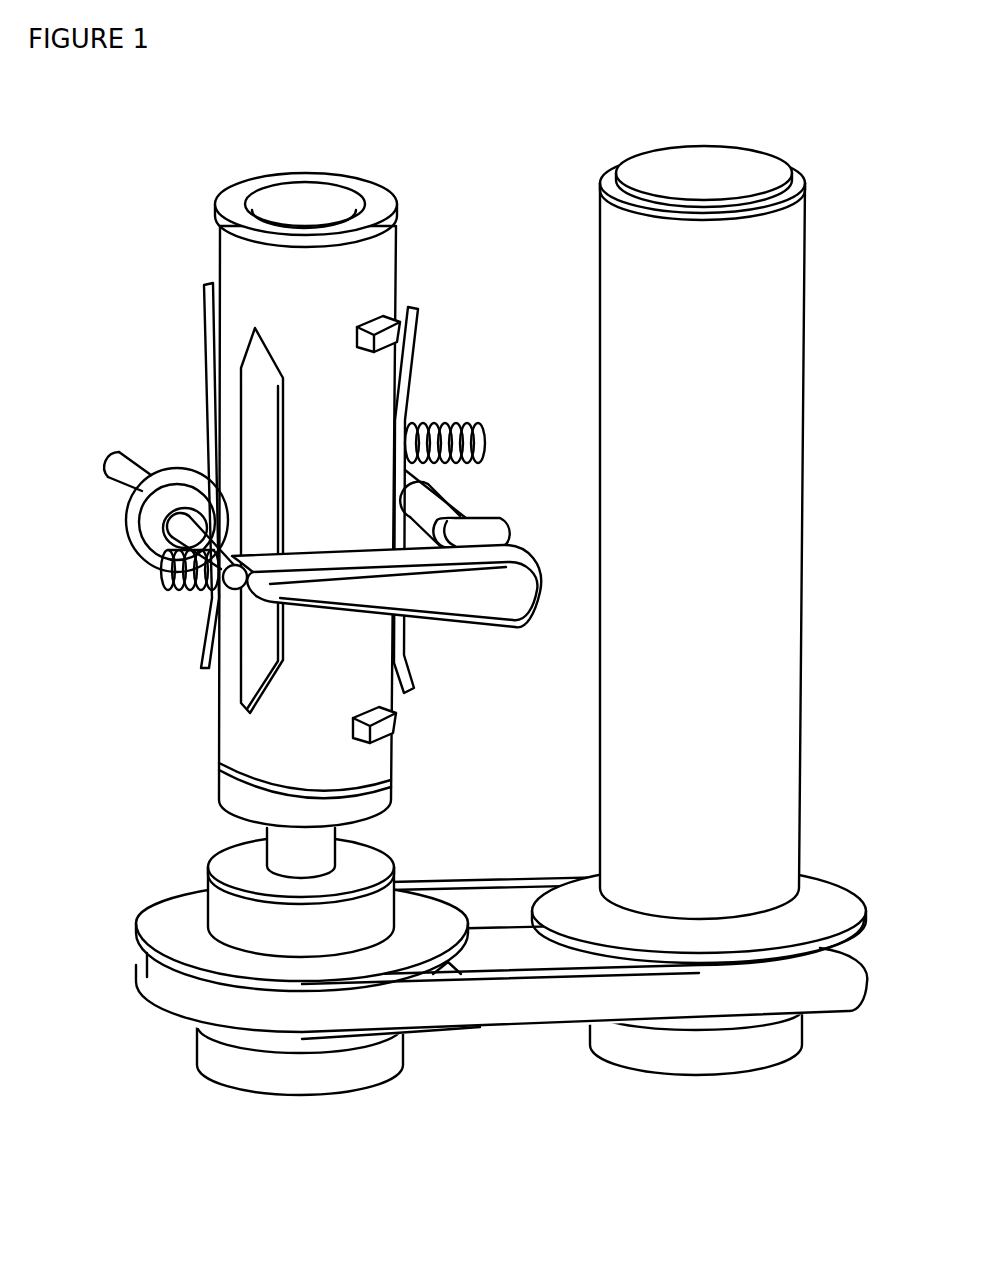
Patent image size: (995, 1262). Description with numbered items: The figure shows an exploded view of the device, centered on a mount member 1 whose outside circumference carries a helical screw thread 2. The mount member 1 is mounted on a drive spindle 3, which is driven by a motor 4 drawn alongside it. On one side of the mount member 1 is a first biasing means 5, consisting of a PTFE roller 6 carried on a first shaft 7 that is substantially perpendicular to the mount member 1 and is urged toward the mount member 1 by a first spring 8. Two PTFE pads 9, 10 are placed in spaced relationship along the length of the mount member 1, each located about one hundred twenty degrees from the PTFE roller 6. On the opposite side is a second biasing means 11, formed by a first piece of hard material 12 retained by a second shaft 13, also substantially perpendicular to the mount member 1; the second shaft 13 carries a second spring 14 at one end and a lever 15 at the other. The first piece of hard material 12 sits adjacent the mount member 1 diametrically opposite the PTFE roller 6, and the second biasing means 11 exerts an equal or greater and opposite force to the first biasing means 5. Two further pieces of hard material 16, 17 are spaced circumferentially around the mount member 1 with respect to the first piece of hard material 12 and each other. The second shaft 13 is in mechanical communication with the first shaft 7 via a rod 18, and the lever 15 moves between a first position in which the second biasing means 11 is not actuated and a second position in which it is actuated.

The mount member 1 is at (215, 738).
The helical screw thread 2 is at (222, 770).
The drive spindle 3 is at (337, 835).
The motor 4 is at (797, 763).
The first biasing means 5 is at (100, 506).
The PTFE roller 6 is at (137, 537).
The first shaft 7 is at (117, 463).
The first spring 8 is at (167, 587).
The PTFE pad 9 is at (392, 320).
The PTFE pad 10 is at (393, 733).
The second biasing means 11 is at (494, 406).
The first piece of hard material 12 is at (425, 360).
The second shaft 13 is at (440, 498).
The second spring 14 is at (487, 440).
The lever 15 is at (507, 627).
The further piece of hard material 16 is at (212, 318).
The further piece of hard material 17 is at (250, 427).
The rod 18 is at (477, 520).